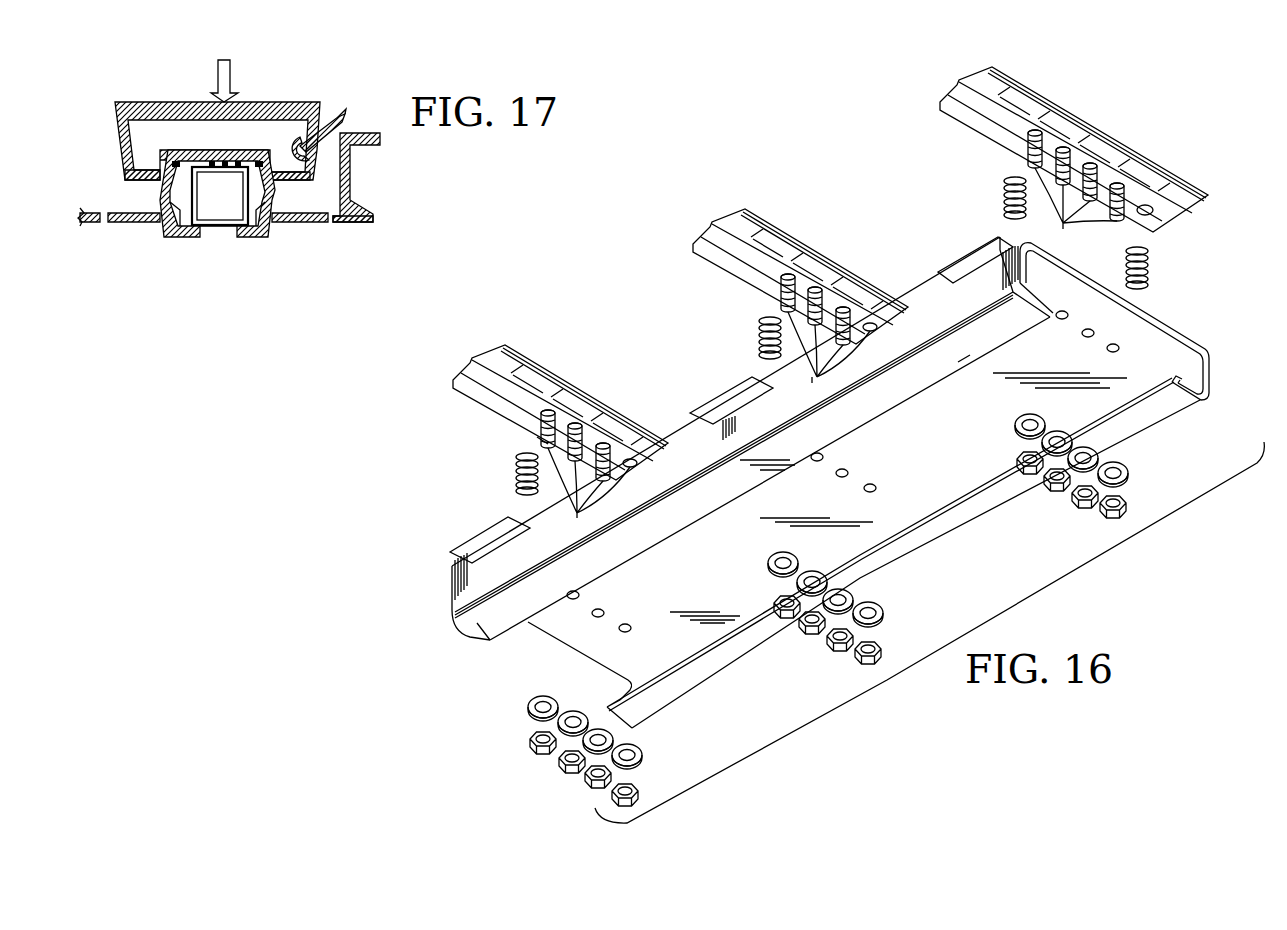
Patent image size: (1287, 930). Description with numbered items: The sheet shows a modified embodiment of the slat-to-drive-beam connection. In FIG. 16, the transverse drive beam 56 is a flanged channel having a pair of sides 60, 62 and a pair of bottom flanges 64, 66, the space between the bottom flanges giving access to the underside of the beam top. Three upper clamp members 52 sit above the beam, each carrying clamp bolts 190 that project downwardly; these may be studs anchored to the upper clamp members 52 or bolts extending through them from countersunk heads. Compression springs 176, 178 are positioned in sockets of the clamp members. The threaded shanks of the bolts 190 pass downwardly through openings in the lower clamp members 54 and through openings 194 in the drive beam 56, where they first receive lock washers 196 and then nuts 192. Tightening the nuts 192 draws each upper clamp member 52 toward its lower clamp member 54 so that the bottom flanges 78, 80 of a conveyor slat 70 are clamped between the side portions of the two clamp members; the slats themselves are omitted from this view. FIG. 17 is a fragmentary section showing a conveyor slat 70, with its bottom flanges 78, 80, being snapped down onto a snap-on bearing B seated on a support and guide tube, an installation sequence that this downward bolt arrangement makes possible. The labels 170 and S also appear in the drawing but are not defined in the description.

In FIG. 16, the upper clamp member 52 is at (525, 372).
In FIG. 16, the lower clamp member 54 is at (445, 552).
In FIG. 16, the transverse drive beam 56 is at (522, 648).
In FIG. 16, the side of drive beam 60 is at (1193, 378).
In FIG. 16, the side of drive beam 62 is at (452, 583).
In FIG. 16, the bottom flange of drive beam 64 is at (1177, 403).
In FIG. 16, the bottom flange of drive beam 66 is at (477, 623).
In FIG. 16, the rail seat 170 is at (537, 437).
In FIG. 16, the compression spring 176 is at (515, 477).
In FIG. 16, the compression spring 178 is at (1150, 263).
In FIG. 16, the clamp bolt 190 is at (821, 383).
In FIG. 16, the nut 192 is at (620, 803).
In FIG. 16, the opening in drive beam 194 is at (627, 625).
In FIG. 16, the lock washer 196 is at (622, 746).
In FIG. 17, the conveyor slat 70 is at (274, 103).
In FIG. 17, the bottom flange of conveyor slat 78 is at (134, 178).
In FIG. 17, the bottom flange of conveyor slat 80 is at (303, 182).
In FIG. 17, the bearing B is at (176, 150).
In FIG. 17, the hook S is at (345, 112).